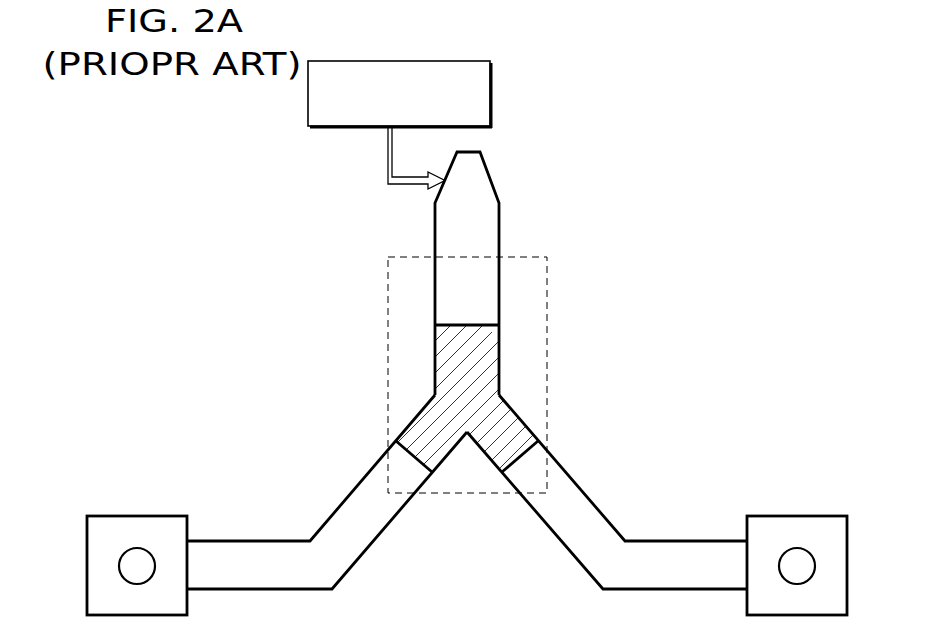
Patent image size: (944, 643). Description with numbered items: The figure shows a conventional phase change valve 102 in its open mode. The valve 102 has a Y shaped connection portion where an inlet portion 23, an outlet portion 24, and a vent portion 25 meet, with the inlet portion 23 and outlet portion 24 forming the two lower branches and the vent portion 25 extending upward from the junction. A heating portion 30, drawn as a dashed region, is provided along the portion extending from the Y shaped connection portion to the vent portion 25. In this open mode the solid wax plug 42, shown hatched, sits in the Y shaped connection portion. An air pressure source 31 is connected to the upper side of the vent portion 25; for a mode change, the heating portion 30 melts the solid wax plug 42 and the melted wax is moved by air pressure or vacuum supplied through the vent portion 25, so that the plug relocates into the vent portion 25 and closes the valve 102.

The air pressure source 31 is at (490, 80).
The phase change valve 102 is at (550, 208).
The vent portion 25 is at (434, 229).
The heating portion 30 is at (547, 283).
The solid wax plug 42 is at (473, 353).
The inlet portion 23 is at (342, 503).
The outlet portion 24 is at (614, 523).